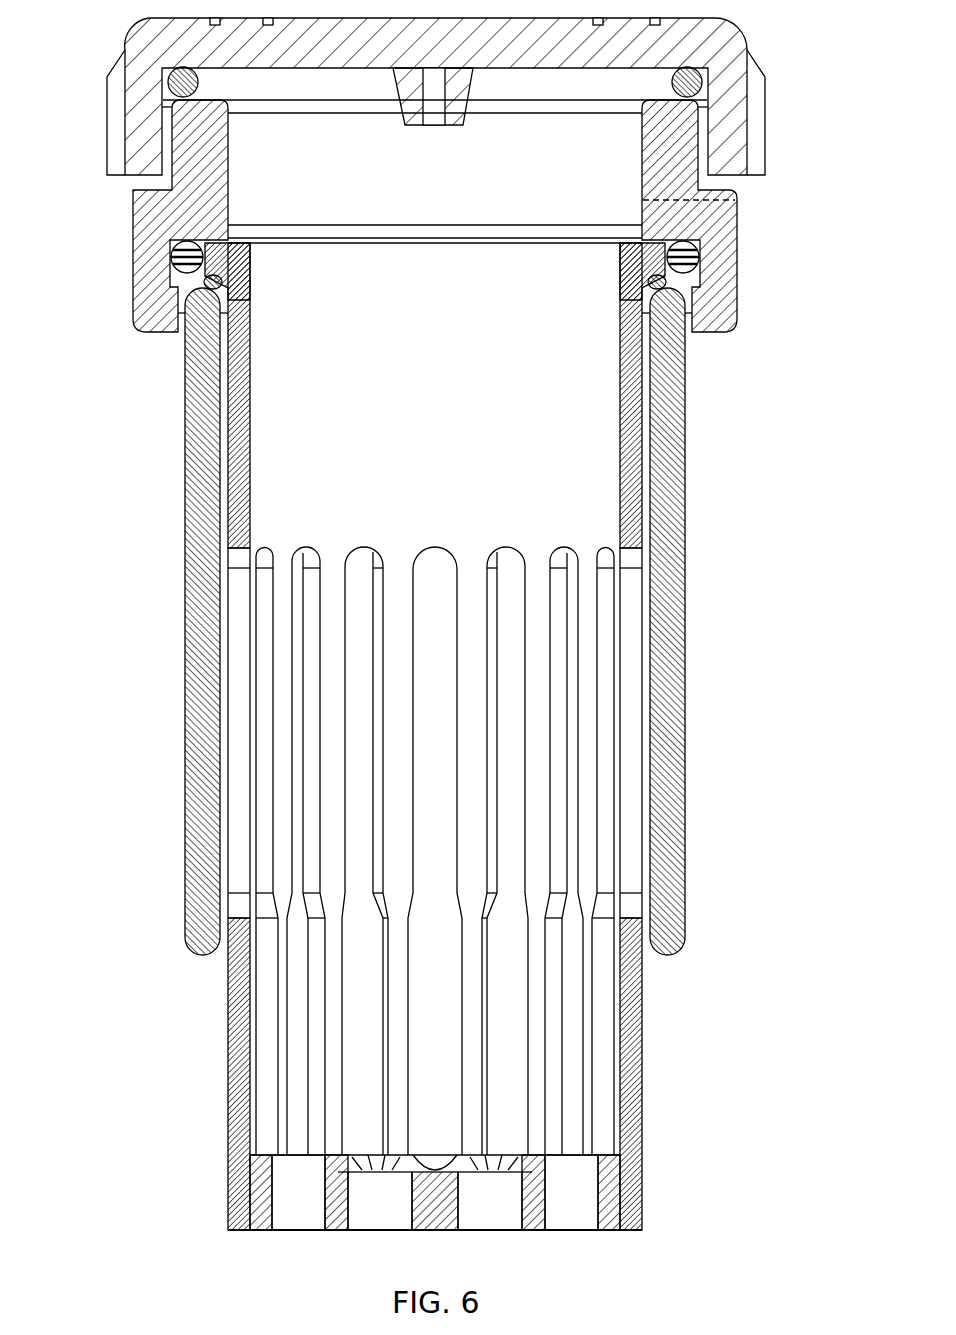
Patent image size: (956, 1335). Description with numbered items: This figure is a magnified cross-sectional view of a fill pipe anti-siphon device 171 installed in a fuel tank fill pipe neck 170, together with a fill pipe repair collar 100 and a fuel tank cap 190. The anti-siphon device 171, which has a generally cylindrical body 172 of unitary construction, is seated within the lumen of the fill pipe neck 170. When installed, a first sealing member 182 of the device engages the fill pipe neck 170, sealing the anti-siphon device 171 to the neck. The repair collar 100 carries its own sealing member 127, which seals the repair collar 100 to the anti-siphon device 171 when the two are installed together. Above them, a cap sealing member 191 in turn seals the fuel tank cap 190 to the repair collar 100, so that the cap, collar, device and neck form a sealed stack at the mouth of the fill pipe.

The fuel tank cap 190 is at (128, 68).
The cap sealing member 191 is at (703, 83).
The fill pipe repair collar 100 is at (140, 252).
The sealing member 127 is at (690, 263).
The first sealing member 182 is at (668, 283).
The body 172 is at (447, 396).
The fuel tank fill pipe neck 170 is at (186, 796).
The fill pipe anti-siphon device 171 is at (236, 1070).